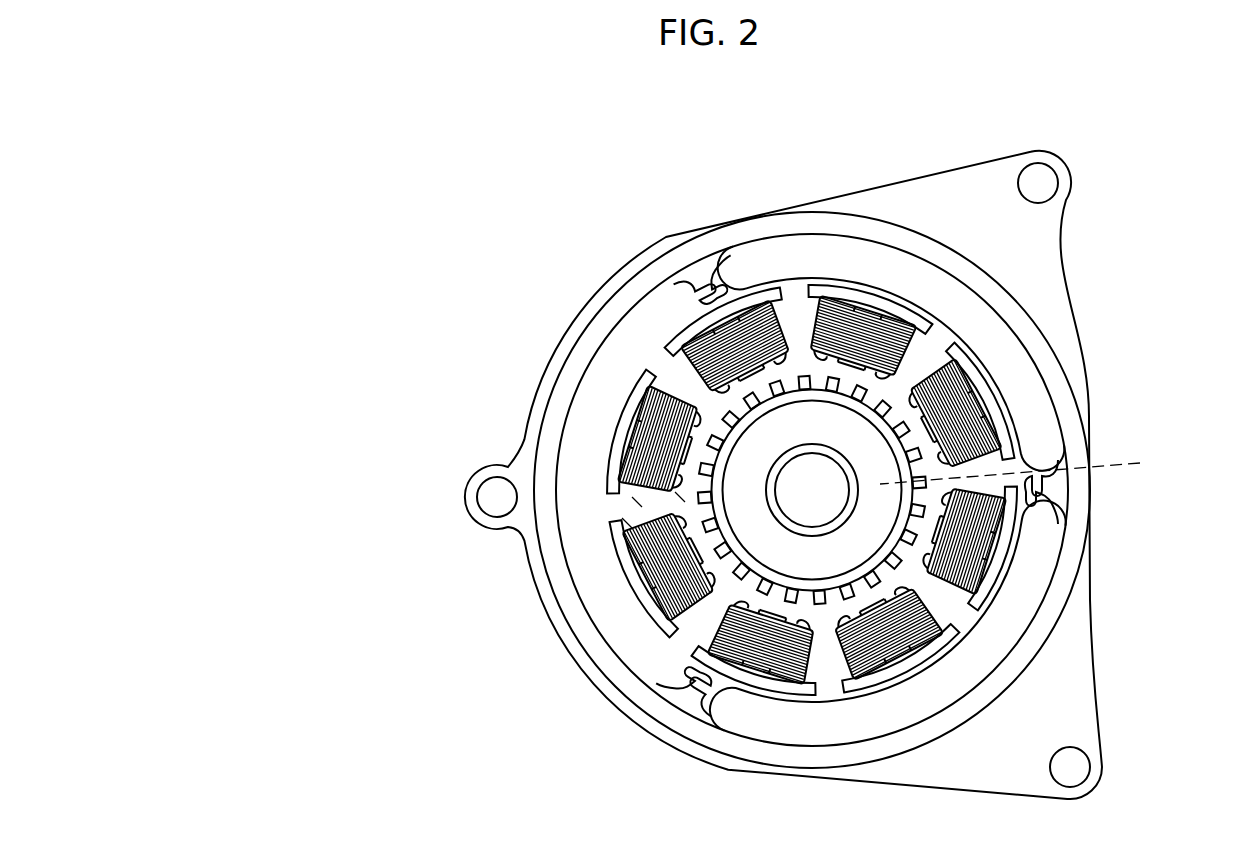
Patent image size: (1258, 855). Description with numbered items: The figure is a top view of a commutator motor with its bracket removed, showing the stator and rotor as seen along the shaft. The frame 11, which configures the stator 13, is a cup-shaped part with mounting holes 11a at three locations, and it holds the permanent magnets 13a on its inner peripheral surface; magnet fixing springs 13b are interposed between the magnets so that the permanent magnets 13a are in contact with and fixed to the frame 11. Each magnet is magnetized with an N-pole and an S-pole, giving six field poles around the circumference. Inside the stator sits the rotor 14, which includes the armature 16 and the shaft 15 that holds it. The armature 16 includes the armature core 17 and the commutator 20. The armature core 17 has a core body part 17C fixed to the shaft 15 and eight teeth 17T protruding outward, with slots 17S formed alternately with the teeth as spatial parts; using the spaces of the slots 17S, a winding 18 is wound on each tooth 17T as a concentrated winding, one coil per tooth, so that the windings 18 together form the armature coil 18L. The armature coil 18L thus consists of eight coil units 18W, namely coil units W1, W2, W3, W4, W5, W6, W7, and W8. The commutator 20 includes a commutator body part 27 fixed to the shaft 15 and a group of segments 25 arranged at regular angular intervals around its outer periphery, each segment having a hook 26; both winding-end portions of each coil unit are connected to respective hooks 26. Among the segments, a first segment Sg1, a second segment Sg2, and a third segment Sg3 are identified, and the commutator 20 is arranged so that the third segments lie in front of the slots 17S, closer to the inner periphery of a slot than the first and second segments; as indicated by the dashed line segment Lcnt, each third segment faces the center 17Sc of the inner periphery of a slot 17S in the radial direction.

The frame 11 is at (815, 448).
The mounting holes 11a is at (1040, 186).
The stator 13 is at (861, 394).
The permanent magnets 13a is at (778, 258).
The magnet fixing springs 13b is at (857, 418).
The rotor 14 is at (716, 459).
The shaft 15 is at (738, 505).
The armature 16 is at (753, 459).
The armature core 17 is at (505, 566).
The teeth 17T is at (637, 502).
The slots 17S is at (680, 497).
The core body part 17C is at (627, 523).
The center of inner periphery of slot 17Sc is at (952, 477).
The windings 18 is at (476, 399).
The armature coil 18L is at (627, 464).
The coil units 18W is at (635, 440).
The commutator 20 is at (490, 654).
The segments 25 is at (650, 560).
The hook 26 is at (640, 550).
The commutator body part 27 is at (660, 628).
The coil unit W1 is at (880, 330).
The coil unit W2 is at (945, 385).
The coil unit W3 is at (983, 547).
The coil unit W4 is at (920, 640).
The coil unit W5 is at (762, 648).
The coil unit W6 is at (670, 615).
The coil unit W7 is at (655, 415).
The coil unit W8 is at (715, 342).
The first segment Sg1 is at (905, 505).
The second segment Sg2 is at (905, 530).
The third segment Sg3 is at (927, 472).
The dashed line segment Lcnt is at (1033, 468).